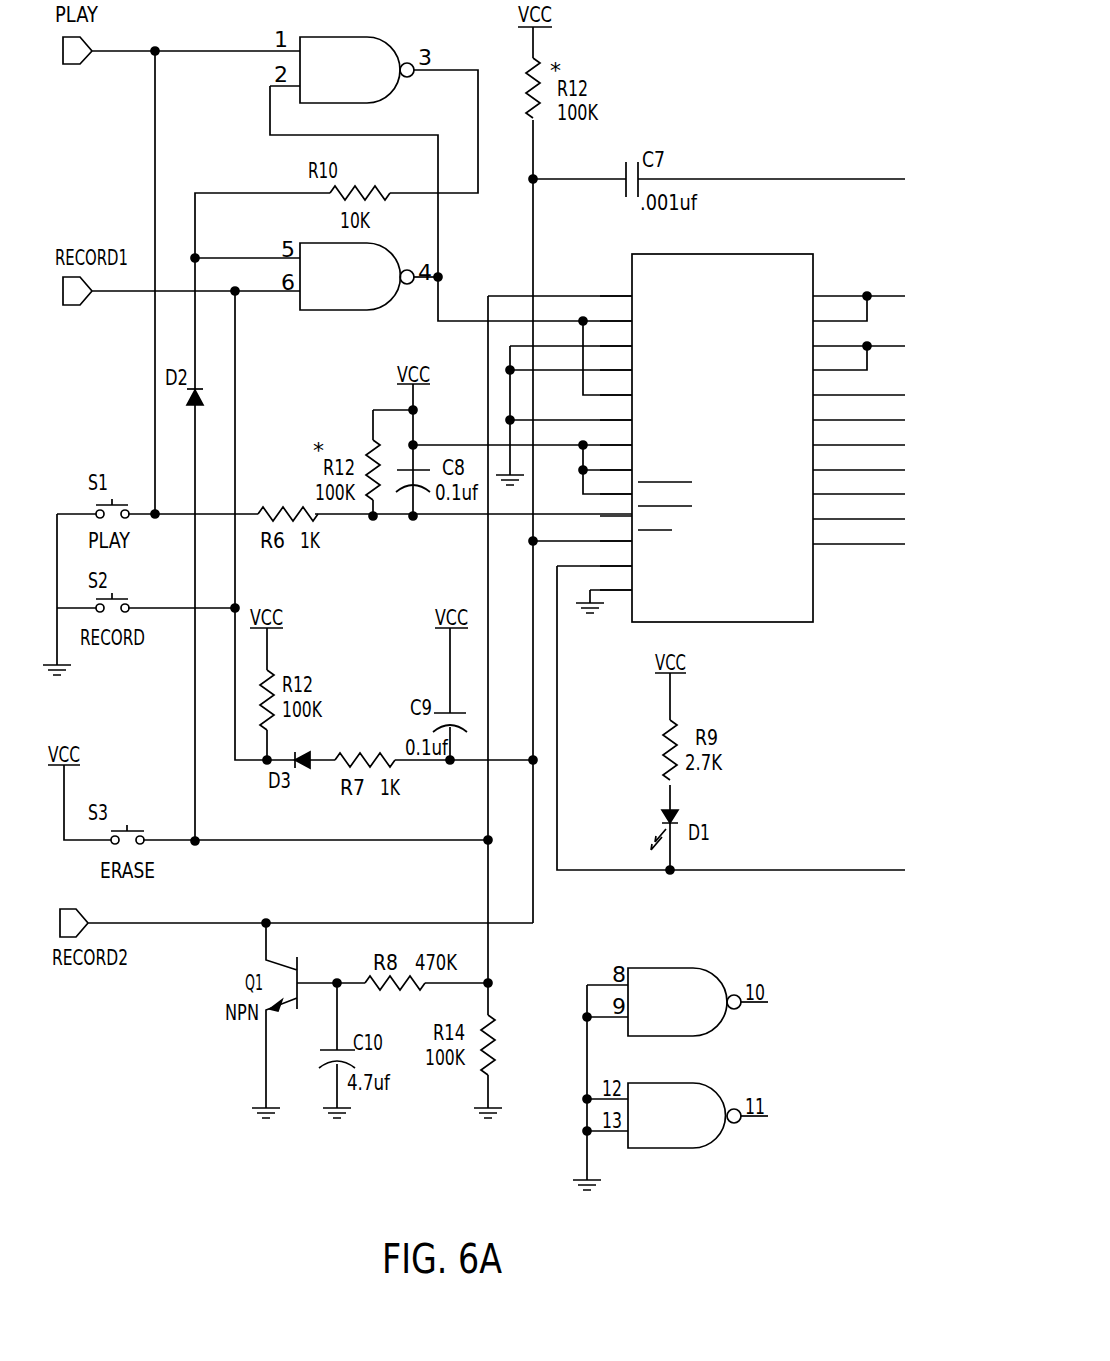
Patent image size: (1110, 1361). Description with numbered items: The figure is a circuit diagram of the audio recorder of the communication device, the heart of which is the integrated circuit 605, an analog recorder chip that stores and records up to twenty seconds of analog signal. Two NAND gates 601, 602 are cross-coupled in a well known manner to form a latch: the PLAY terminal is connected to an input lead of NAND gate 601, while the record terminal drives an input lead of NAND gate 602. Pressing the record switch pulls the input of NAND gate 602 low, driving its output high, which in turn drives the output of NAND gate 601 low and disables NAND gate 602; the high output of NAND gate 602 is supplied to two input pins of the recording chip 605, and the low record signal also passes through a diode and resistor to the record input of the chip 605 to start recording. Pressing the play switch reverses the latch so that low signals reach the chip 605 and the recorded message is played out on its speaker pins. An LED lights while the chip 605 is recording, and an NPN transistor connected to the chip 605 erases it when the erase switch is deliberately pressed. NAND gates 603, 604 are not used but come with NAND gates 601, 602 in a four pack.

The NAND gate 601 is at (372, 37).
The NAND gate 602 is at (372, 310).
The NAND gate 603 is at (697, 968).
The NAND gate 604 is at (697, 1148).
The integrated circuit 605 is at (722, 254).